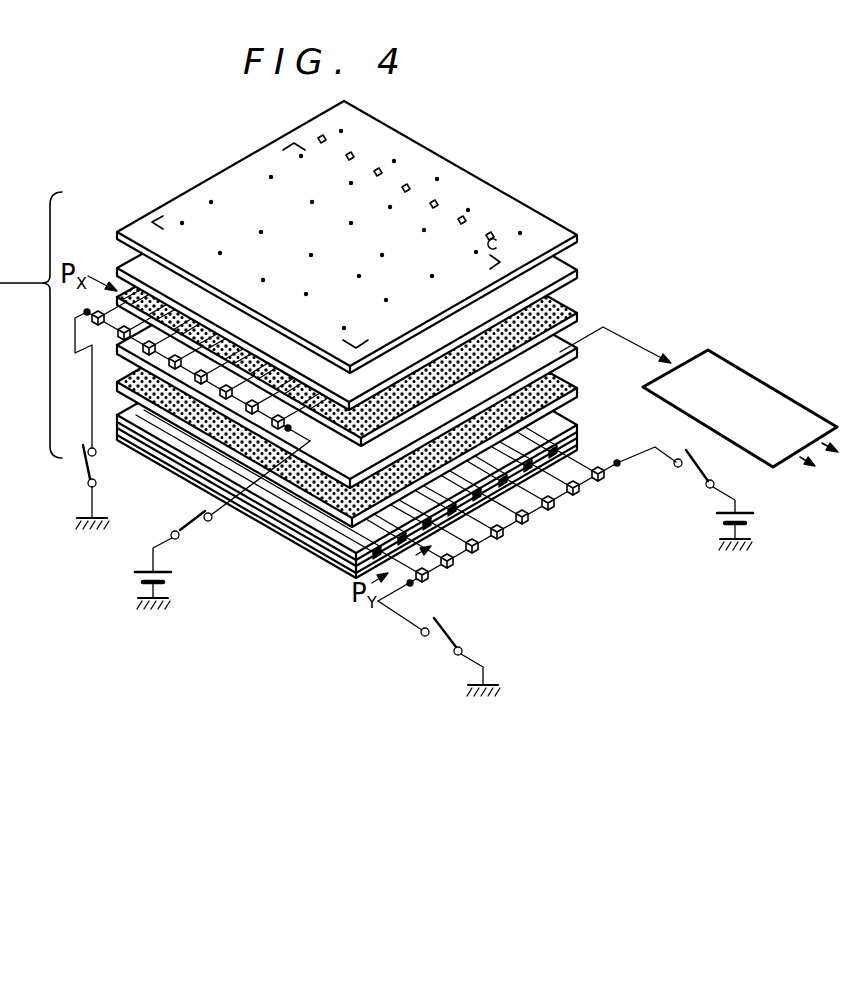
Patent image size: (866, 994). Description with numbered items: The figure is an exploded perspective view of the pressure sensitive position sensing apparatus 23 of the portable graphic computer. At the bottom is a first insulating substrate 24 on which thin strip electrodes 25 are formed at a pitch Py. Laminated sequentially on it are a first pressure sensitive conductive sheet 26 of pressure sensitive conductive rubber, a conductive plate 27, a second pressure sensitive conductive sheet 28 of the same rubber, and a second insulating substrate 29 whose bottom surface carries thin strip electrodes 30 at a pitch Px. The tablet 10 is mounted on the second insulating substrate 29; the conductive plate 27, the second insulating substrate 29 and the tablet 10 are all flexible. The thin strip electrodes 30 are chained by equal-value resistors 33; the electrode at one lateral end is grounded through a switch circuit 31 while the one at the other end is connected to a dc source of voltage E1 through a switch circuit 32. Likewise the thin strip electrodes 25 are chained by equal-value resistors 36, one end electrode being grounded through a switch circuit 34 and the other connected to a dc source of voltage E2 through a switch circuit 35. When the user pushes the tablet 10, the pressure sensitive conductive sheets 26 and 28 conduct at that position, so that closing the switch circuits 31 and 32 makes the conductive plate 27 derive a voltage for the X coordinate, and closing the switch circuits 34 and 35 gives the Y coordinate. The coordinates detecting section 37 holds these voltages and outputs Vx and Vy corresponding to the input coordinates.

The tablet 10 is at (238, 165).
The pressure sensitive position sensing apparatus 23 is at (522, 152).
The first insulating substrate 24 is at (583, 433).
The thin strip electrodes 25 is at (333, 556).
The first pressure sensitive conductive sheet 26 is at (578, 388).
The conductive plate 27 is at (578, 348).
The second pressure sensitive conductive sheet 28 is at (578, 312).
The second insulating substrate 29 is at (578, 268).
The thin strip electrodes 30 is at (118, 292).
The switch circuit 31 is at (85, 467).
The switch circuit 32 is at (199, 527).
The resistors 33 is at (97, 331).
The switch circuit 34 is at (438, 642).
The switch circuit 35 is at (691, 475).
The resistors 36 is at (425, 582).
The coordinates detecting section 37 is at (793, 398).
The dc voltage source voltage E1 is at (167, 588).
The dc voltage source voltage E2 is at (748, 531).